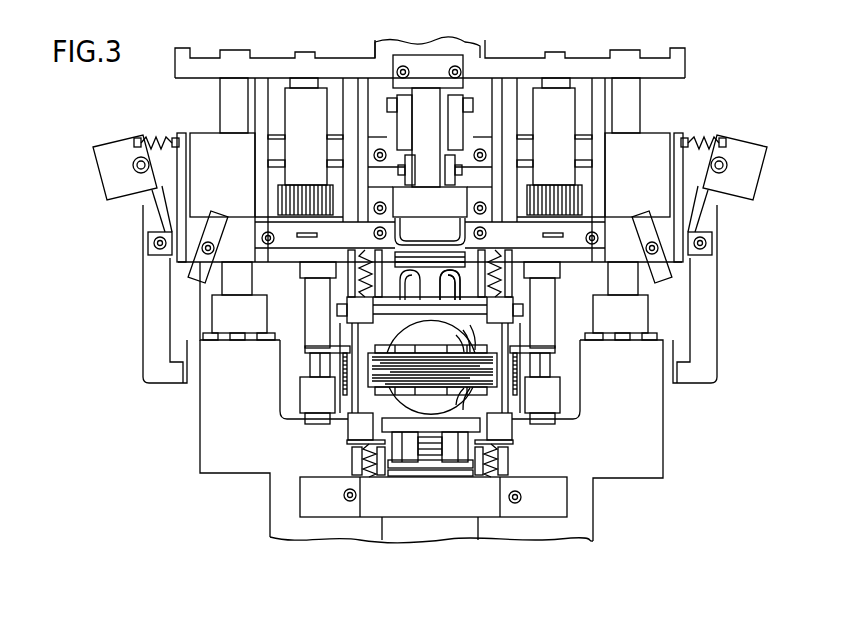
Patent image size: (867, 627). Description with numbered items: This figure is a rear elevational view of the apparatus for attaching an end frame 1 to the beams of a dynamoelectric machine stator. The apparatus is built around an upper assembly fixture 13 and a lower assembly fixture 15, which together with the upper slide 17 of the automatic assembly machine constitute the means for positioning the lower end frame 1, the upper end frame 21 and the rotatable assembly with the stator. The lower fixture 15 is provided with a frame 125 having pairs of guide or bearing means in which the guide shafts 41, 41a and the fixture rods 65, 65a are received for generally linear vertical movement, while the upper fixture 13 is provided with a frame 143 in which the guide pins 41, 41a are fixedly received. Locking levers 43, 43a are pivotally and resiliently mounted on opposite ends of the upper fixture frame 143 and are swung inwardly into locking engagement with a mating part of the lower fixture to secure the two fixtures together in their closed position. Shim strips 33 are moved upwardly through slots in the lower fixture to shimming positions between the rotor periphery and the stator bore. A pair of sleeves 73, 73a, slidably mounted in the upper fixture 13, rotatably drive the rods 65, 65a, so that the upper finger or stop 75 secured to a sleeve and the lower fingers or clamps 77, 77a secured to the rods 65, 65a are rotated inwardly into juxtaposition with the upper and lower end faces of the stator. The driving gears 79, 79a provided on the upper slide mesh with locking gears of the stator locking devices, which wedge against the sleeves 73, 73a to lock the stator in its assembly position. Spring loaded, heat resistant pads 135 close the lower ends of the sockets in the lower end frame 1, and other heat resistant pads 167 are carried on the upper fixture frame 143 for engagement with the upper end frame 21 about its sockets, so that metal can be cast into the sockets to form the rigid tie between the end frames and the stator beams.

The end frame 1 is at (353, 428).
The upper assembly fixture 13 is at (702, 133).
The lower assembly fixture 15 is at (681, 437).
The upper slide 17 is at (521, 59).
The upper end frame 21 is at (510, 310).
The shim strips 33 is at (441, 280).
The guide shaft 41 is at (227, 107).
The guide shaft 41a is at (632, 102).
The fixture locking lever 43 is at (150, 293).
The fixture locking lever 43a is at (712, 338).
The fixture rod 65 is at (310, 364).
The fixture rod 65a is at (547, 367).
The sleeve 73 is at (312, 288).
The sleeve 73a is at (548, 305).
The upper finger 75 is at (330, 345).
The lower finger 77 is at (310, 393).
The lower finger 77a is at (556, 348).
The driving gear 79 is at (285, 195).
The driving gear 79a is at (572, 202).
The frame 125 is at (247, 458).
The heat resistant pad 135 is at (352, 442).
The frame 143 is at (237, 168).
The heat resistant pad 167 is at (330, 299).